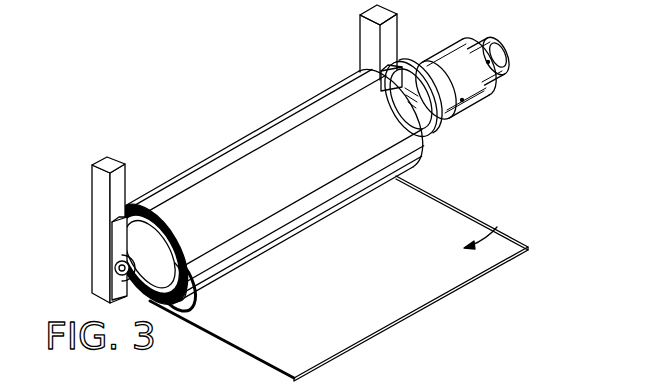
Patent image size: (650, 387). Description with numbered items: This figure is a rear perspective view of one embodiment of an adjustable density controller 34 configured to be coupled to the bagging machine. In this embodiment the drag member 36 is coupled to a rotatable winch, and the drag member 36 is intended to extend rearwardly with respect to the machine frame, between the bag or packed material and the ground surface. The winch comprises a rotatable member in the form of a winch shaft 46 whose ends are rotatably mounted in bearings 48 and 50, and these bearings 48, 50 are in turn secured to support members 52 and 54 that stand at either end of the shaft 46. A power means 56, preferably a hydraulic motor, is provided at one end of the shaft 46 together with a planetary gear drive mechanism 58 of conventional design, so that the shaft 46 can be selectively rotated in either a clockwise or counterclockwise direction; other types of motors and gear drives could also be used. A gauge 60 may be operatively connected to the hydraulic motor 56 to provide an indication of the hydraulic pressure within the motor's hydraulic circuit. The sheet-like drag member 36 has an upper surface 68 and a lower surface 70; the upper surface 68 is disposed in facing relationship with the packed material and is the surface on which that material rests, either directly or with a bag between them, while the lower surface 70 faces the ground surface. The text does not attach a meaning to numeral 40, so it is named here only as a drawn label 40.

The density controller 34 is at (305, 161).
The drag member 36 is at (390, 158).
The sheet 40 is at (339, 278).
The winch shaft 46 is at (123, 272).
The bearing 48 is at (117, 255).
The bearing 50 is at (437, 130).
The support member 52 is at (100, 193).
The support member 54 is at (388, 30).
The power means 56 is at (512, 52).
The planetary gear drive mechanism 58 is at (465, 103).
The gauge 60 is at (495, 75).
The upper surface 68 is at (497, 227).
The lower surface 70 is at (381, 335).